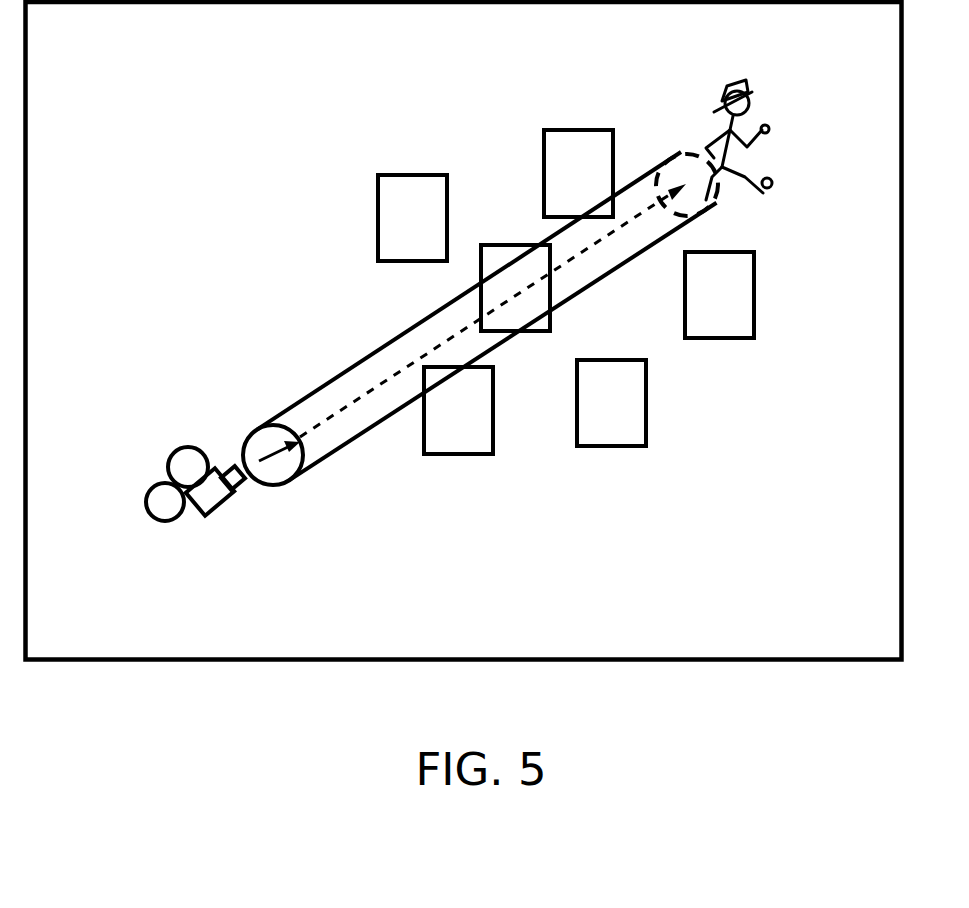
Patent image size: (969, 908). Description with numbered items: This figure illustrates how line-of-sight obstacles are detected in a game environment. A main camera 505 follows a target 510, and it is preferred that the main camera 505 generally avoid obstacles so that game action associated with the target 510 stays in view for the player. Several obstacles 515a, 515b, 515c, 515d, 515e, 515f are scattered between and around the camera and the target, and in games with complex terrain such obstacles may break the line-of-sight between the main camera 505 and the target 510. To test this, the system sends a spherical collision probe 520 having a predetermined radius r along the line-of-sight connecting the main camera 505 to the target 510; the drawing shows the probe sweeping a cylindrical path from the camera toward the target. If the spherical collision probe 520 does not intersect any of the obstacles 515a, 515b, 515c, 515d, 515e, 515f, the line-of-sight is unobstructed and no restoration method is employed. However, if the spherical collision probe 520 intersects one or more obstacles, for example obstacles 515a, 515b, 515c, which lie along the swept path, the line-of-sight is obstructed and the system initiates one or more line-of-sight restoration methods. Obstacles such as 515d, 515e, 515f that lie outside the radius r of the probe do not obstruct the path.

The main camera 505 is at (178, 446).
The target 510 is at (747, 88).
The obstacle 515a is at (467, 456).
The obstacle 515b is at (503, 243).
The obstacle 515c is at (560, 127).
The obstacle 515d is at (410, 173).
The obstacle 515e is at (617, 450).
The obstacle 515f is at (740, 342).
The spherical collision probe 520 is at (283, 486).
The predetermined radius r is at (248, 442).